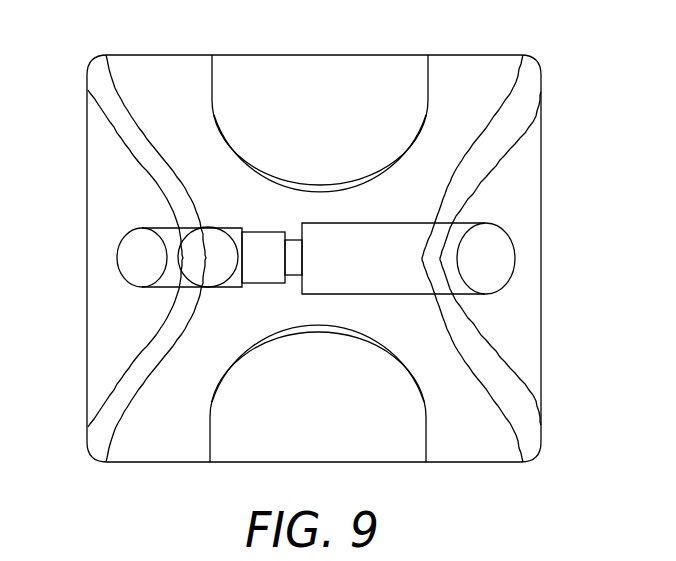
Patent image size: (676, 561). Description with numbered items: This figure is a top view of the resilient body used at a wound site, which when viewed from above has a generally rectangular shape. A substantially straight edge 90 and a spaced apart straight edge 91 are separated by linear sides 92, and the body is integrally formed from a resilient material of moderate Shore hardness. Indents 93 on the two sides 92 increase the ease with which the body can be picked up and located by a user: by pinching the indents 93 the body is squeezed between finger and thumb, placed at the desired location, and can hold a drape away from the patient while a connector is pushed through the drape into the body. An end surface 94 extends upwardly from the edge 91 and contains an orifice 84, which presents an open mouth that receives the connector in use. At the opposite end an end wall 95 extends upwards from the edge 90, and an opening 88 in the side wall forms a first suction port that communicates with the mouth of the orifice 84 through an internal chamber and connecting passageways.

The orifice 84 is at (498, 256).
The opening 88 is at (138, 256).
The substantially straight edge 90 is at (87, 343).
The spaced apart straight edge 91 is at (541, 343).
The linear sides 92 is at (470, 55).
The indents 93 is at (304, 122).
The end surface 94 is at (528, 181).
The end wall 95 is at (108, 180).